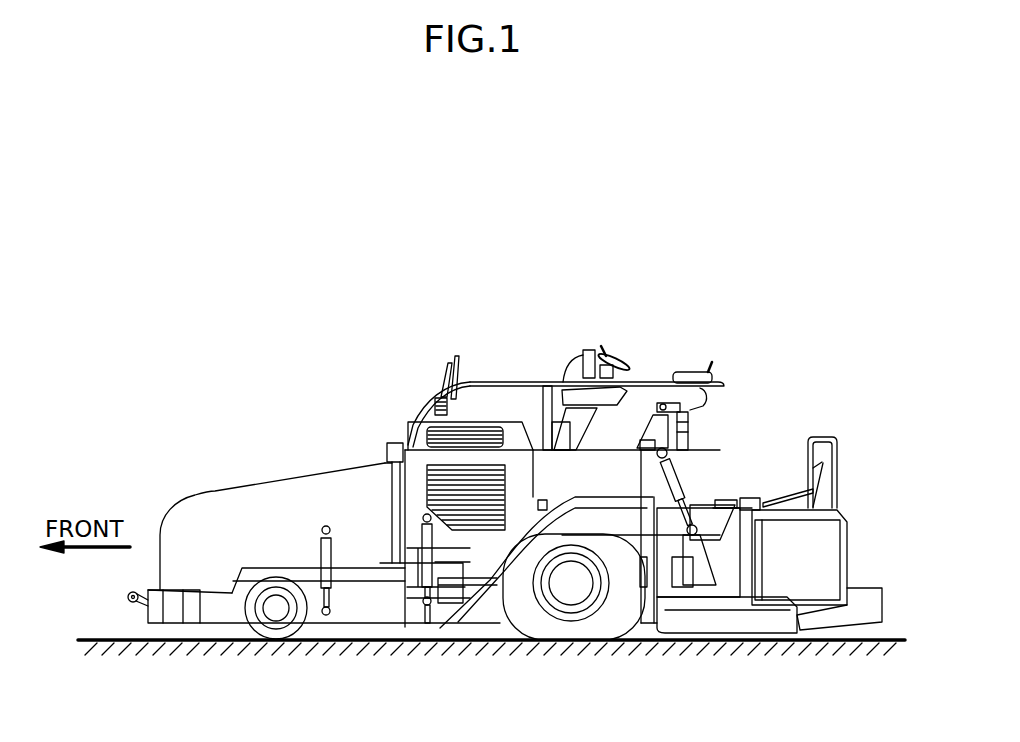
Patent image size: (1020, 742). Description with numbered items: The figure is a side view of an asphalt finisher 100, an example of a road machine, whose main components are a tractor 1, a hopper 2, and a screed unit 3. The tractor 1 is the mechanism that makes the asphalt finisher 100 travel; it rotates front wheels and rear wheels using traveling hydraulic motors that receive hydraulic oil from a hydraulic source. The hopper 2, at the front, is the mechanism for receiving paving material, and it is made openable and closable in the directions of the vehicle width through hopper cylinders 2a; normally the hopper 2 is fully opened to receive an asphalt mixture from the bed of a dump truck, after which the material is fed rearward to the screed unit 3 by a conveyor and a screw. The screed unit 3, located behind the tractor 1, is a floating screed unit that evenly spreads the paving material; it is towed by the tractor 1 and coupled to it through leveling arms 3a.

The asphalt finisher 100 is at (830, 338).
The tractor 1 is at (503, 624).
The hopper 2 is at (170, 506).
The hopper cylinder 2a is at (337, 598).
The screed unit 3 is at (853, 518).
The leveling arm 3a is at (702, 503).